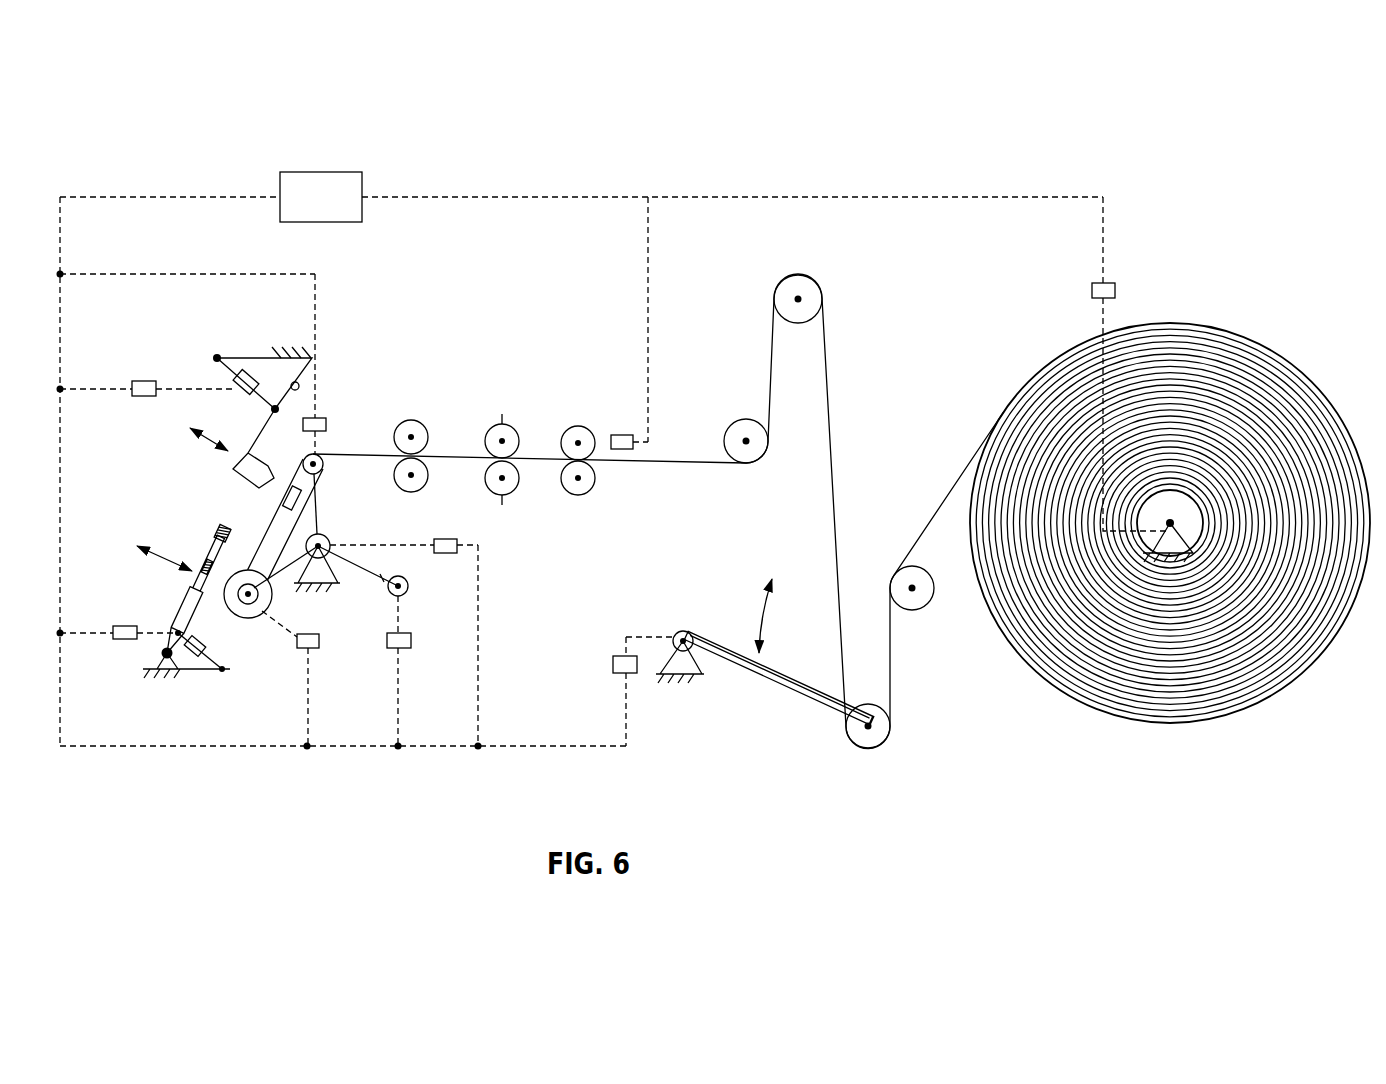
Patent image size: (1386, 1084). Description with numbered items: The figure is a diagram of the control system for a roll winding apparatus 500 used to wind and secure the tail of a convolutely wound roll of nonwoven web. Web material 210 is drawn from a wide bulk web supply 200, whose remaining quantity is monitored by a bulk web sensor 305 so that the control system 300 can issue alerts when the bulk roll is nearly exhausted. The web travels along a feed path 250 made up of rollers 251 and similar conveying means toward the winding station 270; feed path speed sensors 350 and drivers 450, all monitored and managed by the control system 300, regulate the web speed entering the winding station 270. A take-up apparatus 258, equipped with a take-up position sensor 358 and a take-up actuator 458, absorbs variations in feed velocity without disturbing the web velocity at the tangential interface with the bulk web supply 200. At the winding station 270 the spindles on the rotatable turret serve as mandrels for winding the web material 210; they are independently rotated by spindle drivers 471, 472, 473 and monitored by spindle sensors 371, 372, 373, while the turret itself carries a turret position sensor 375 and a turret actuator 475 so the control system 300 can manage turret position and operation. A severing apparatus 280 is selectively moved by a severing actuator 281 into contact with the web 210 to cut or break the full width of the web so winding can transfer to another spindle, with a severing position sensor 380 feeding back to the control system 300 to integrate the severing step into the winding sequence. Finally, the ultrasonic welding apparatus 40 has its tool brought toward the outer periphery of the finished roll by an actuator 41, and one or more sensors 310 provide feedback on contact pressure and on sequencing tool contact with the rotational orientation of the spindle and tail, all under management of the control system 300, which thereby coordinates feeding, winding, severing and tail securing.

The roll winding apparatus 500 is at (955, 140).
The control system 300 is at (335, 221).
The bulk web sensor 305 is at (1092, 291).
The bulk web supply 200 is at (1192, 439).
The web material 210 is at (942, 498).
The rollers 251 is at (833, 283).
The feed path 250 is at (534, 503).
The drivers 450 is at (618, 472).
The winding station 270 is at (380, 400).
The feed path speed sensors 350 is at (622, 434).
The spindle sensor 371 is at (315, 416).
The spindle driver 471 is at (334, 470).
The turret actuator 475 is at (350, 533).
The turret position sensor 375 is at (458, 538).
The spindle driver 473 is at (405, 593).
The spindle sensor 373 is at (388, 650).
The spindle driver 472 is at (255, 617).
The spindle sensor 372 is at (318, 633).
The severing apparatus 280 is at (202, 462).
The severing actuator 281 is at (248, 370).
The severing position sensor 380 is at (144, 396).
The ultrasonic welding apparatus 40 is at (203, 524).
The actuator 41 is at (198, 638).
The sensors 310 is at (128, 624).
The take-up position sensor 358 is at (623, 655).
The take-up actuator 458 is at (683, 612).
The take-up apparatus 258 is at (782, 714).